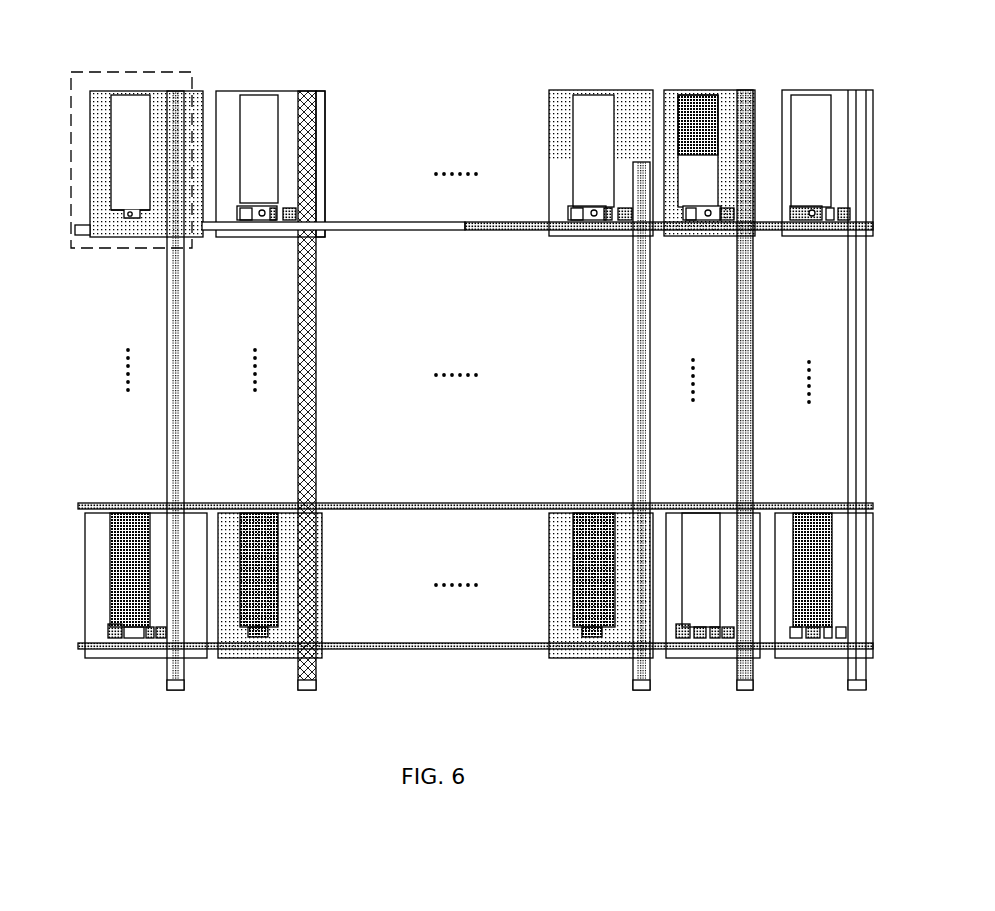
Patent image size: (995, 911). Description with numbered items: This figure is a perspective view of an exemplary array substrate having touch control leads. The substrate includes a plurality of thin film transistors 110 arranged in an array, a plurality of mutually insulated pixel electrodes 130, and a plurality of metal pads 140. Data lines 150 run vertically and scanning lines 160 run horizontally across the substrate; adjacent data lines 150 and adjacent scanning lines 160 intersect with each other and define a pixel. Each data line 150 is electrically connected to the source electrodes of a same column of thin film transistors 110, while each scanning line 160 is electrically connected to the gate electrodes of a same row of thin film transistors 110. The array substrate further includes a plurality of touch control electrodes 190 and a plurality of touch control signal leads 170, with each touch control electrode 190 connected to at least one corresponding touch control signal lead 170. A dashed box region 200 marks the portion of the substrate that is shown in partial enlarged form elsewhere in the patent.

The dashed box region 200 is at (107, 72).
The pixel electrode 130 is at (118, 117).
The metal pad 140 is at (112, 218).
The thin film transistor 110 is at (153, 231).
The touch control electrode 190 is at (236, 96).
The touch control signal lead 170 is at (317, 105).
The data line 150 is at (308, 142).
The scanning line 160 is at (362, 229).